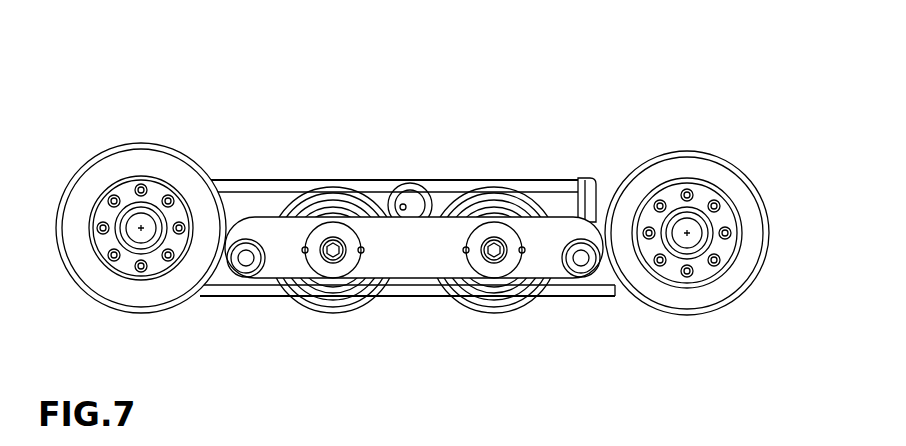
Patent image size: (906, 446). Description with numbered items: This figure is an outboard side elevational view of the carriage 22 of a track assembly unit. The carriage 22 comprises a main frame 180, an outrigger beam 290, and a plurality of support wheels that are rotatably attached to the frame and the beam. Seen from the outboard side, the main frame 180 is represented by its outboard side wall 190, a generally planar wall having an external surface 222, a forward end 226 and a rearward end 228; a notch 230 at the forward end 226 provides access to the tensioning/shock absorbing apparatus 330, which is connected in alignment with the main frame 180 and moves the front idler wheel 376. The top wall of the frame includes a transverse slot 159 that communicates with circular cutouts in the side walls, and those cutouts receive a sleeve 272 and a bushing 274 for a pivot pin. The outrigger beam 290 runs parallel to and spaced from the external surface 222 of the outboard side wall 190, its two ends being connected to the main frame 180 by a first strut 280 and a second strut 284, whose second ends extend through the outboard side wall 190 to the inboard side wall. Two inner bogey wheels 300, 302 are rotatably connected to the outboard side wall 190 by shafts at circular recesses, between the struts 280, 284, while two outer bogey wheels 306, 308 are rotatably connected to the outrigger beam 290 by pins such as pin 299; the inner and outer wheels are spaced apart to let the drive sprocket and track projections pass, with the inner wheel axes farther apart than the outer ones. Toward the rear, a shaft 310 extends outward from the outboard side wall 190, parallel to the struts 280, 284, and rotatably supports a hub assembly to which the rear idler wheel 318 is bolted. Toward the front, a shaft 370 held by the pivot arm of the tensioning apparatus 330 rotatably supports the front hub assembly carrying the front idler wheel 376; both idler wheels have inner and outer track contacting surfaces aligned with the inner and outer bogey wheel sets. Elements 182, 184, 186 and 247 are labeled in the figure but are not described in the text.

The carriage 22 is at (422, 211).
The main frame 180 is at (303, 183).
The outboard side wall 190 is at (400, 298).
The rearward end 228 is at (218, 283).
The forward end 226 is at (600, 285).
The upper rail end 182 is at (565, 182).
The notch 230 is at (590, 180).
The tensioning/shock absorbing apparatus 330 is at (592, 163).
The outer bogey wheel 308 is at (337, 186).
The outer bogey wheel 306 is at (490, 195).
The inner bogey wheel 302 is at (275, 300).
The external surface 222 is at (430, 300).
The inner bogey wheel 300 is at (545, 300).
The idler pulley 186 is at (413, 172).
The transverse slot 159 is at (432, 186).
The bushing 274 is at (380, 190).
The sleeve 272 is at (430, 193).
The outrigger beam 290 is at (388, 253).
The fastening element or pin 299 is at (340, 265).
The pulley hub 247 is at (497, 262).
The second strut 284 is at (247, 262).
The first strut 280 is at (583, 262).
The rear idler wheel 318 is at (129, 233).
The wheel rim 184 is at (220, 175).
The shaft 310 is at (127, 237).
The front idler wheel 376 is at (691, 246).
The shaft 370 is at (695, 245).